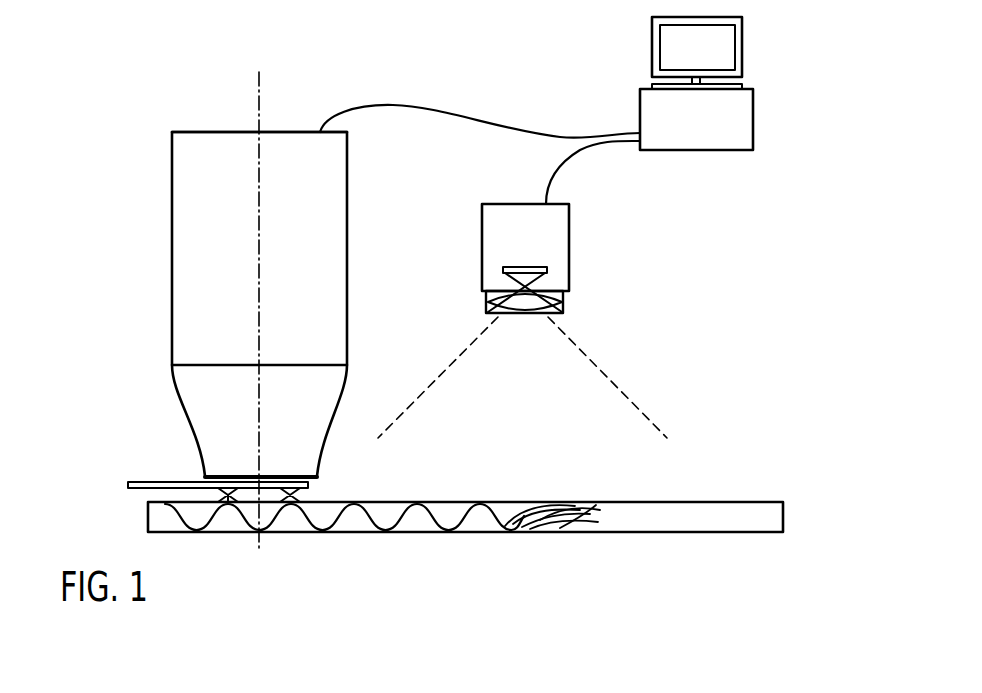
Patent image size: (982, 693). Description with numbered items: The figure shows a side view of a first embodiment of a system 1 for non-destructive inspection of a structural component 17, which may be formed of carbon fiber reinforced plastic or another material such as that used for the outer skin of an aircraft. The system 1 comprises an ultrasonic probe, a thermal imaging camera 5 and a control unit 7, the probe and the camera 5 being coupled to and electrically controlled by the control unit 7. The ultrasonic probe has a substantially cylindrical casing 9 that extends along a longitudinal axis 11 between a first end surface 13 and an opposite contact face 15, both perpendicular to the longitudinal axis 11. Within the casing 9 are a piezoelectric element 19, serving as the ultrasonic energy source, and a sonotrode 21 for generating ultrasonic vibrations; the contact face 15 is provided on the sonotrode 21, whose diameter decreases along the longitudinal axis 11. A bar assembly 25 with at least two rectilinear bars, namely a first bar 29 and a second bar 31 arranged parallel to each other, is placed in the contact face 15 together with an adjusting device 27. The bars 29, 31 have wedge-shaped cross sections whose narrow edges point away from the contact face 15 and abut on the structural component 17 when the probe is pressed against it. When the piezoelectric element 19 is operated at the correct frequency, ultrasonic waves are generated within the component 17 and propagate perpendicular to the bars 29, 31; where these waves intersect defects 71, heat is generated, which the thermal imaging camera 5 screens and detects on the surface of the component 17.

The system for non-destructive inspection 1 is at (392, 54).
The thermal imaging camera 5 is at (533, 250).
The control unit 7 is at (762, 58).
The casing 9 is at (172, 203).
The longitudinal axis 11 is at (257, 80).
The first end surface 13 is at (199, 132).
The contact face 15 is at (312, 495).
The structural component 17 is at (678, 528).
The piezoelectric element 19 is at (315, 270).
The sonotrode 21 is at (320, 425).
The bar assembly 25 is at (218, 497).
The adjusting device 27 is at (153, 482).
The first bar 29 is at (227, 504).
The second bar 31 is at (292, 504).
The defects 71 is at (552, 532).